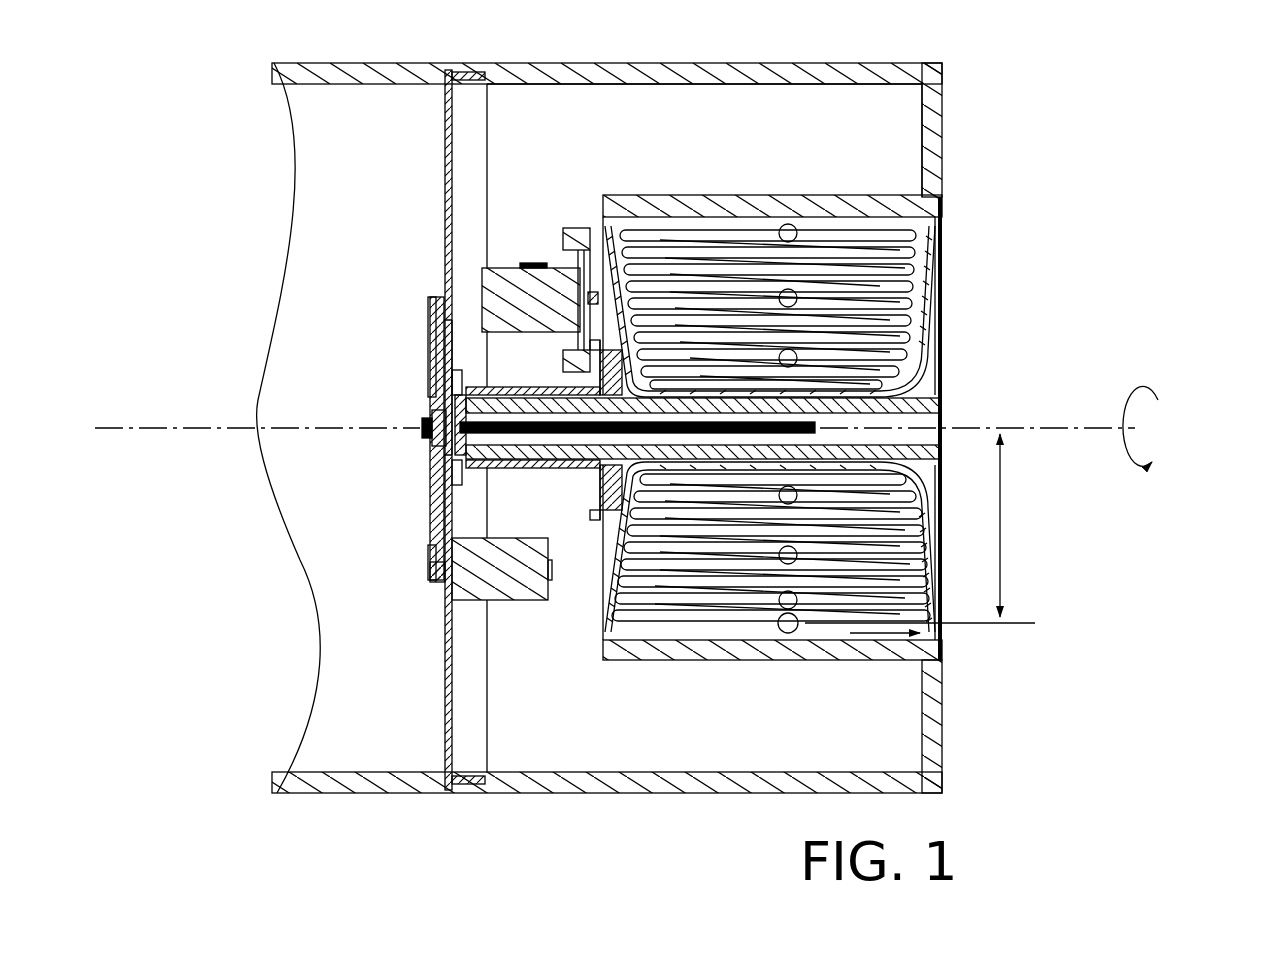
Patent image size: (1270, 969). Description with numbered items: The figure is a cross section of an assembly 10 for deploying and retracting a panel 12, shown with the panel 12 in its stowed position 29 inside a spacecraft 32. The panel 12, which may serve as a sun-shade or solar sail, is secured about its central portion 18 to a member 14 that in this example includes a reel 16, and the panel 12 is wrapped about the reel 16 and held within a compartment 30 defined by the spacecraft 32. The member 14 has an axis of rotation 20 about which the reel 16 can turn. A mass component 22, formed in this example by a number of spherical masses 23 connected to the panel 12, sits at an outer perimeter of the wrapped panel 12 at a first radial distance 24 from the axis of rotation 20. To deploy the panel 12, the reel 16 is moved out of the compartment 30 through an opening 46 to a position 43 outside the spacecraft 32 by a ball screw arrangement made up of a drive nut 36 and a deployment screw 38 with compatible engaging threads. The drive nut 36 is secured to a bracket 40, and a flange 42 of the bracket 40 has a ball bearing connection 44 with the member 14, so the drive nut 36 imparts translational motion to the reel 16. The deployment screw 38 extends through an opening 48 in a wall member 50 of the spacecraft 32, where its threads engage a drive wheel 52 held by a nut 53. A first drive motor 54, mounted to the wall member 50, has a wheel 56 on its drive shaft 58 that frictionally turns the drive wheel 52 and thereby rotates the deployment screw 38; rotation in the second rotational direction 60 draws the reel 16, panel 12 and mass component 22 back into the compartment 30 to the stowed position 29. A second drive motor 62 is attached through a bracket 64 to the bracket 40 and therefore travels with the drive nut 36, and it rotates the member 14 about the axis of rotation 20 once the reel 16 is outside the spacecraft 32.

The assembly 10 is at (708, 404).
The panel 12 is at (882, 272).
The member 14 is at (905, 383).
The reel 16 is at (927, 338).
The central portion 18 is at (600, 470).
The axis of rotation 20 is at (240, 428).
The mass component 22 is at (803, 423).
The spherical masses 23 is at (788, 224).
The first radial distance 24 is at (1000, 540).
The stowed position 29 is at (806, 346).
The compartment 30 is at (895, 232).
The spacecraft 32 is at (708, 72).
The drive nut 36 is at (460, 425).
The deployment screw 38 is at (448, 452).
The bracket 40 is at (530, 390).
The flange 42 is at (640, 337).
The position 43 is at (1160, 112).
The ball bearing connection 44 is at (588, 298).
The opening 46 is at (852, 636).
The opening 48 is at (430, 398).
The wall member 50 is at (452, 190).
The drive wheel 52 is at (430, 336).
The nut 53 is at (430, 430).
The first drive motor 54 is at (515, 603).
The wheel 56 is at (432, 578).
The drive shaft 58 is at (445, 585).
The second rotational direction 60 is at (1158, 398).
The second drive motor 62 is at (540, 265).
The bracket 64 is at (540, 348).